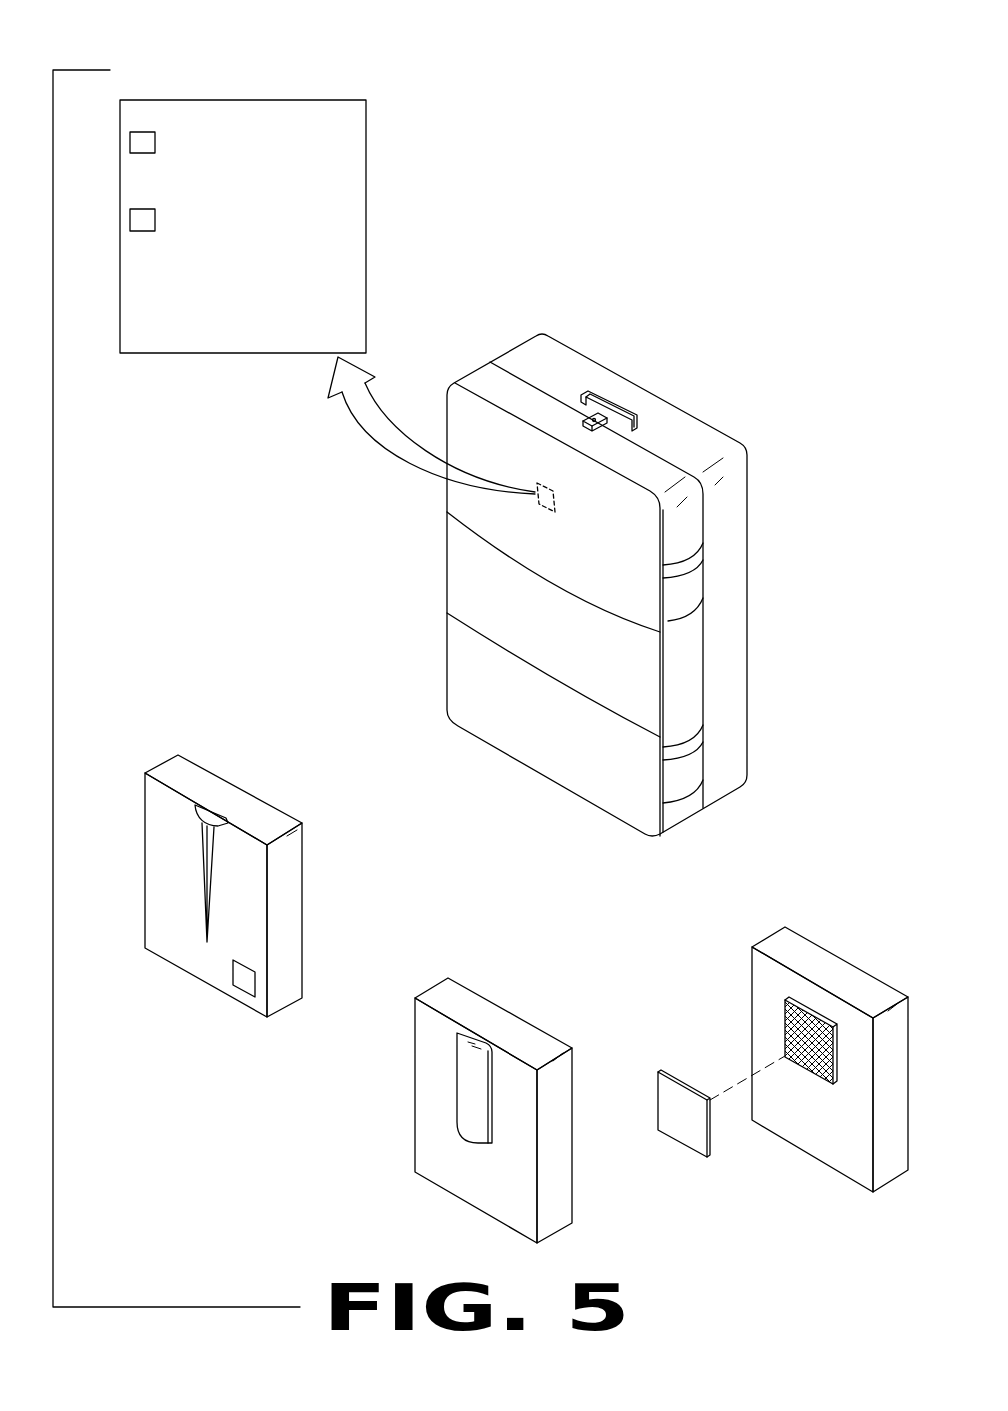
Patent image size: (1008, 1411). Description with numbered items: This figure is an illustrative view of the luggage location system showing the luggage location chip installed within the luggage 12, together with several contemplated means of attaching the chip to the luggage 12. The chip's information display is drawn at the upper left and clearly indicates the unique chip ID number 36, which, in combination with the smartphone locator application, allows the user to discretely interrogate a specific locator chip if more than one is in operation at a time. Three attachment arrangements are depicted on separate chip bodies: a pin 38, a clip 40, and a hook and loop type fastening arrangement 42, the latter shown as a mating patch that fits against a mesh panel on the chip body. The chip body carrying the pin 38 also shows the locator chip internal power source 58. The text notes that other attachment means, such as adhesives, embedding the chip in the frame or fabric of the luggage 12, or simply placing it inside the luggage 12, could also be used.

The luggage 12 is at (637, 665).
The unique ID number 36 is at (322, 305).
The pin 38 is at (207, 837).
The clip 40 is at (472, 1117).
The hook and loop-type fastener 42 is at (692, 1122).
The locator chip internal power source 58 is at (245, 963).